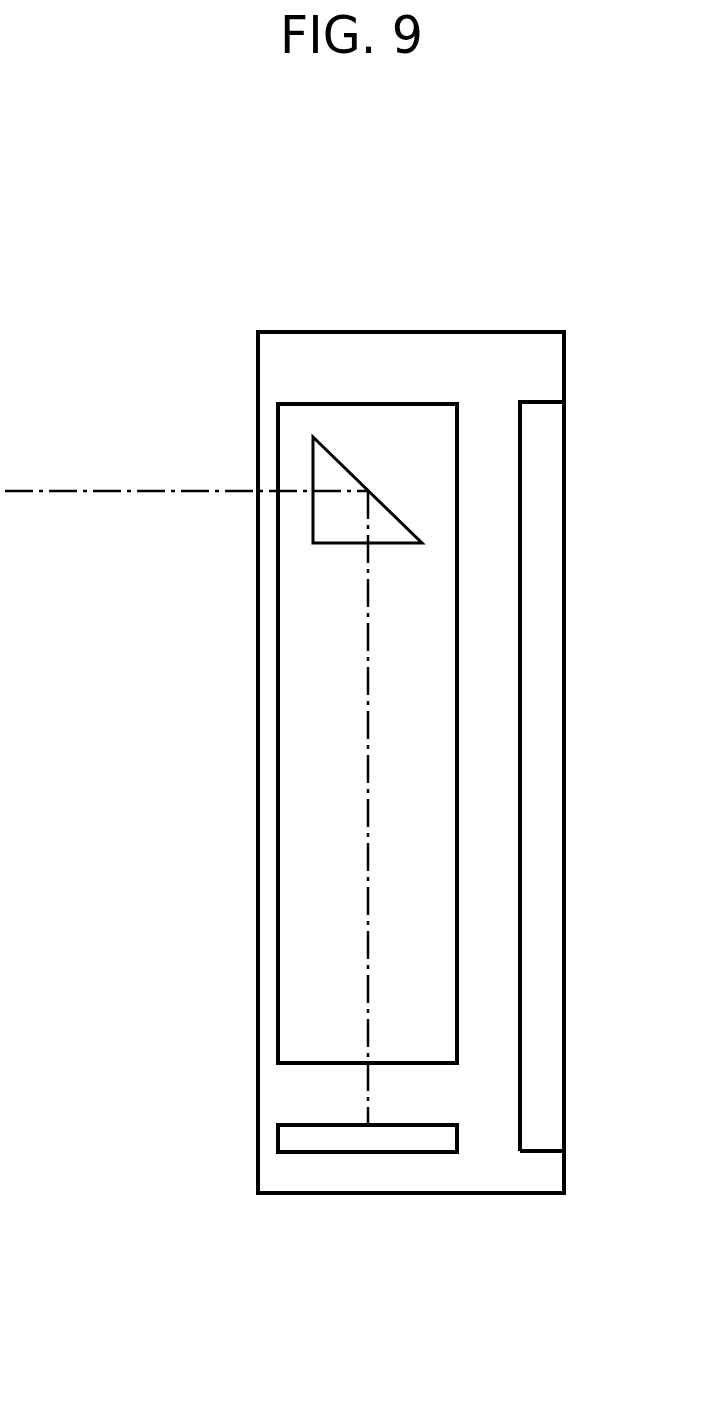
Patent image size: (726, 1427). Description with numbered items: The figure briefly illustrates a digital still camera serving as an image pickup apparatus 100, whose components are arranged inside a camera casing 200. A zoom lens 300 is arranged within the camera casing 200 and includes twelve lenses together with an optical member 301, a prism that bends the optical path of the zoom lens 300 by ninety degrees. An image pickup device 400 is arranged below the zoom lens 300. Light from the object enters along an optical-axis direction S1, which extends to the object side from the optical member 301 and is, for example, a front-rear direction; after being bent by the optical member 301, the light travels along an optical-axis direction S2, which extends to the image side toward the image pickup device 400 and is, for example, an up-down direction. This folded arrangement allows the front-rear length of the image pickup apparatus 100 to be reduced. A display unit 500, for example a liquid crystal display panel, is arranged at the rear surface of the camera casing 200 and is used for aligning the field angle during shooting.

The image pickup apparatus 100 is at (522, 148).
The camera casing 200 is at (535, 332).
The zoom lens 300 is at (357, 404).
The optical member 301 is at (348, 478).
The image pickup device 400 is at (329, 1143).
The display unit 500 is at (527, 1115).
The optical-axis direction S1 is at (120, 490).
The optical-axis direction S2 is at (368, 778).